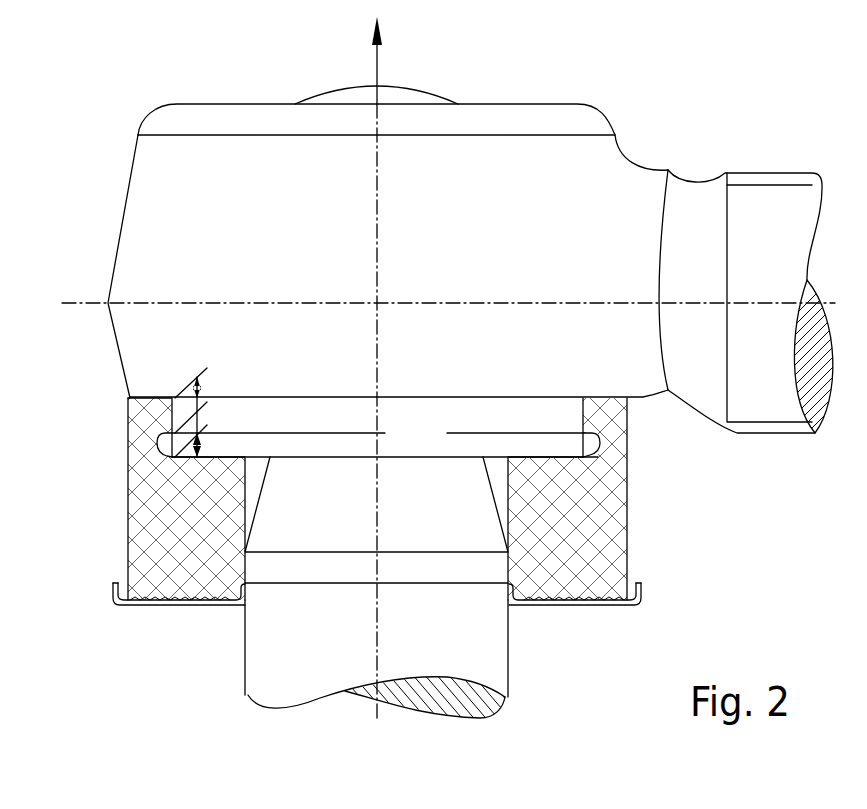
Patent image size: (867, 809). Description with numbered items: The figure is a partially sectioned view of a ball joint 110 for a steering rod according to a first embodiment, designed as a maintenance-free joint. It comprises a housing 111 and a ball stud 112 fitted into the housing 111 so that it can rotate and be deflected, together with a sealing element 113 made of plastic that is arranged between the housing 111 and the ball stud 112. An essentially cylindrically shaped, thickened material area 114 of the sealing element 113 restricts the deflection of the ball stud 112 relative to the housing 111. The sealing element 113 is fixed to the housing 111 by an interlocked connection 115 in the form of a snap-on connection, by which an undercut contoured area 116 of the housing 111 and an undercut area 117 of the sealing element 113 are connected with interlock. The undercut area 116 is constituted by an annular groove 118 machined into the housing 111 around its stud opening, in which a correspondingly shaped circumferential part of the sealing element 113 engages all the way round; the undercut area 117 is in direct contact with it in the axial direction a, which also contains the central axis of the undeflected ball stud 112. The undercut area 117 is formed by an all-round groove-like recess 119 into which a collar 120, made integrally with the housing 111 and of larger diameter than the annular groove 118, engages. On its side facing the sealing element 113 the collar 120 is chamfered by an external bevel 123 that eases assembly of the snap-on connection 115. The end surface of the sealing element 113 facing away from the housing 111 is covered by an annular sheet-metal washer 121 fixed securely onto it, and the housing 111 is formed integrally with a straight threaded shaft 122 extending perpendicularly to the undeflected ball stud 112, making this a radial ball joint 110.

The axial direction a is at (377, 60).
The ball joint 110 is at (437, 268).
The housing 111 is at (122, 193).
The ball stud 112 is at (273, 673).
The sealing element 113 is at (631, 564).
The thickened material area 114 is at (163, 528).
The interlocked connection 115 is at (606, 423).
The undercut contoured area of the housing 116 is at (200, 390).
The undercut contour area of the sealing element 117 is at (200, 414).
The annular groove 118 is at (444, 437).
The groove-like recess 119 is at (580, 443).
The collar 120 is at (157, 443).
The sheet-metal washer 121 is at (570, 620).
The threaded shaft 122 is at (787, 210).
The external bevel 123 is at (600, 457).